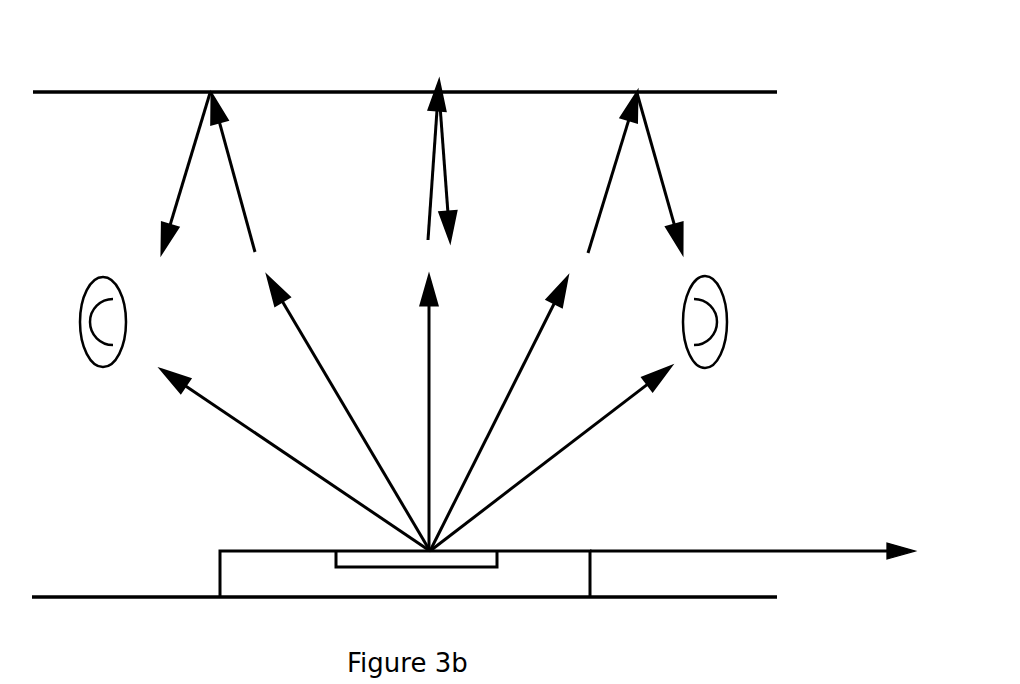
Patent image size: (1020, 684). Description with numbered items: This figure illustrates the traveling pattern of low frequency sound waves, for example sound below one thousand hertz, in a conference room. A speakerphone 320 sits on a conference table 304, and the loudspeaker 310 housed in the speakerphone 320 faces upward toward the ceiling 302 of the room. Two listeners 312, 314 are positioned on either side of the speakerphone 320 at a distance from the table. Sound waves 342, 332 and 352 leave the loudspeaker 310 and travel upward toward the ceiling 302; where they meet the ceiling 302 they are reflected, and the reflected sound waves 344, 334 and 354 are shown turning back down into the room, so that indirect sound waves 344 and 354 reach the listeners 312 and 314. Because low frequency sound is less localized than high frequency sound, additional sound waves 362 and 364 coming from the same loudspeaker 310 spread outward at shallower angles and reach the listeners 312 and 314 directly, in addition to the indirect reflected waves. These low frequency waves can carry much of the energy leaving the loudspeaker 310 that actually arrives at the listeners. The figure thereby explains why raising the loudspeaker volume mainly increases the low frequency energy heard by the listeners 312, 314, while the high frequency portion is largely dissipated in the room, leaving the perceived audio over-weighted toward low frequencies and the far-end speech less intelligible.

The ceiling 302 is at (75, 92).
The conference table 304 is at (57, 595).
The loudspeaker 310 is at (477, 568).
The listener 312 is at (128, 325).
The listener 314 is at (727, 322).
The speakerphone 320 is at (540, 550).
The sound wave 332 is at (427, 377).
The sound wave 334 is at (438, 167).
The sound wave 342 is at (318, 358).
The reflected sound wave 344 is at (240, 187).
The sound wave 352 is at (530, 342).
The reflected sound wave 354 is at (666, 178).
The direct low frequency sound wave 362 is at (178, 370).
The direct low frequency sound wave 364 is at (613, 415).